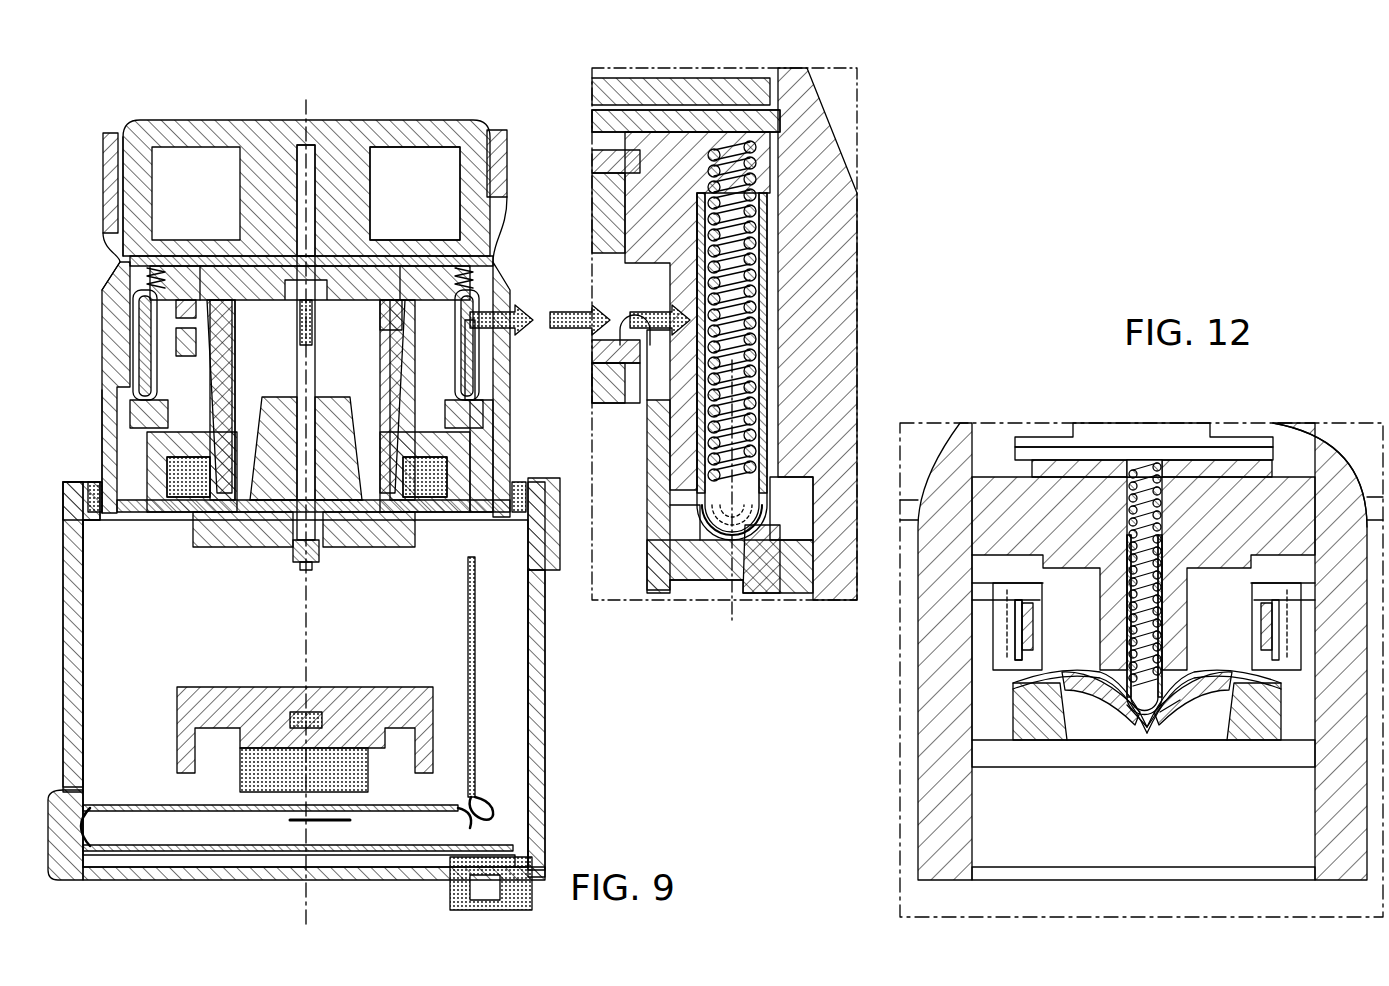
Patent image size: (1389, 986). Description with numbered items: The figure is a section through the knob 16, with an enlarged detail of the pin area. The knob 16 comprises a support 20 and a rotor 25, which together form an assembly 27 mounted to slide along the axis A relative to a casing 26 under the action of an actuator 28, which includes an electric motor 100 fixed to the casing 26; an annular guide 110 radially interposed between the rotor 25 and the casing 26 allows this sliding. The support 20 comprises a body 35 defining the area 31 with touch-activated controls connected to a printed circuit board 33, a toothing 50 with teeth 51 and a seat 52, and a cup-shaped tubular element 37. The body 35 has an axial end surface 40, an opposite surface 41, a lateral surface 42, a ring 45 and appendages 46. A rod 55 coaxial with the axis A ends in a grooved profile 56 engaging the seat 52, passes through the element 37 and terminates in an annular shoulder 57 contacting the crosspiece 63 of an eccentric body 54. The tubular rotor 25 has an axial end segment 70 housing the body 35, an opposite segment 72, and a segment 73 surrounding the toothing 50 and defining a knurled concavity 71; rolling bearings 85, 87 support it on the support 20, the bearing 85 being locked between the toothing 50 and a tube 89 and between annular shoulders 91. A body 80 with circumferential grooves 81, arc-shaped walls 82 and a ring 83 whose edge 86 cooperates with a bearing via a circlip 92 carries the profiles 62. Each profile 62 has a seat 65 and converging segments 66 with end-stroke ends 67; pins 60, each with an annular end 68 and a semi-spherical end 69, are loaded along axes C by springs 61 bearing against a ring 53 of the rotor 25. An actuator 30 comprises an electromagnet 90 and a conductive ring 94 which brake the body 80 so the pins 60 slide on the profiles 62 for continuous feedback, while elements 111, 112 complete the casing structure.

In FIG. 9, the knob 16 is at (495, 108).
In FIG. 9, the support 20 is at (203, 118).
In FIG. 9, the rotor 25 is at (505, 236).
In FIG. 12, the rotor 25 is at (1305, 410).
In FIG. 9, the casing 26 is at (545, 655).
In FIG. 9, the assembly 27 is at (52, 185).
In FIG. 9, the actuator 28 is at (350, 792).
In FIG. 9, the actuator 30 is at (150, 540).
In FIG. 9, the area 31 is at (406, 118).
In FIG. 9, the printed circuit board 33 is at (490, 740).
In FIG. 9, the body 35 is at (258, 140).
In FIG. 9, the cup-shaped tubular element 37 is at (250, 450).
In FIG. 9, the axial end surface 40 is at (238, 118).
In FIG. 9, the surface 41 is at (262, 225).
In FIG. 9, the lateral surface 42 is at (110, 172).
In FIG. 9, the ring 45 is at (455, 262).
In FIG. 9, the appendages 46 is at (330, 230).
In FIG. 9, the toothing 50 is at (335, 272).
In FIG. 9, the teeth 51 is at (400, 300).
In FIG. 9, the seat 52 is at (262, 272).
In FIG. 9, the ring 53 is at (490, 262).
In FIG. 12, the ring 53 is at (1093, 447).
In FIG. 9, the body 54 is at (262, 568).
In FIG. 9, the rod 55 is at (315, 368).
In FIG. 9, the grooved profile 56 is at (314, 330).
In FIG. 9, the annular shoulder 57 is at (318, 556).
In FIG. 9, the pins 60 is at (135, 360).
In FIG. 12, the pins 60 is at (1170, 540).
In FIG. 9, the springs 61 is at (165, 268).
In FIG. 12, the springs 61 is at (1160, 490).
In FIG. 9, the profiles 62 is at (145, 420).
In FIG. 12, the profiles 62 is at (1147, 742).
In FIG. 9, the crosspiece 63 is at (400, 512).
In FIG. 9, the seat 65 is at (760, 555).
In FIG. 12, the seat 65 is at (1165, 725).
In FIG. 9, the segments 66 is at (790, 520).
In FIG. 12, the segments 66 is at (1060, 715).
In FIG. 12, the ends 67 is at (1030, 580).
In FIG. 9, the annular end 68 is at (770, 185).
In FIG. 12, the annular end 68 is at (1060, 500).
In FIG. 9, the semi-spherical end 69 is at (700, 525).
In FIG. 12, the semi-spherical end 69 is at (1175, 705).
In FIG. 9, the axial end segment 70 is at (128, 138).
In FIG. 9, the knurled annular concavity 71 is at (108, 240).
In FIG. 9, the axial end segment 72 is at (103, 440).
In FIG. 9, the segment 73 is at (110, 300).
In FIG. 12, the segment 73 is at (940, 540).
In FIG. 9, the body 80 is at (485, 440).
In FIG. 12, the body 80 is at (985, 720).
In FIG. 9, the circumferential grooves 81 is at (200, 388).
In FIG. 12, the circumferential grooves 81 is at (1045, 632).
In FIG. 9, the walls 82 is at (158, 440).
In FIG. 12, the walls 82 is at (1110, 750).
In FIG. 9, the ring 83 is at (390, 340).
In FIG. 9, the annular rolling bearing 85 is at (475, 330).
In FIG. 9, the edge 86 is at (196, 310).
In FIG. 9, the annular rolling bearing 87 is at (196, 344).
In FIG. 9, the tube 89 is at (398, 330).
In FIG. 9, the electromagnet 90 is at (430, 500).
In FIG. 12, the electromagnet 90 is at (1000, 780).
In FIG. 9, the annular shoulders 91 is at (650, 200).
In FIG. 9, the circlip 92 is at (612, 370).
In FIG. 9, the ring 94 is at (190, 445).
In FIG. 12, the ring 94 is at (990, 752).
In FIG. 9, the electric motor 100 is at (275, 775).
In FIG. 9, the annular guide 110 is at (517, 512).
In FIG. 9, the elements 111 is at (140, 805).
In FIG. 9, the element 112 is at (468, 640).
In FIG. 9, the axis A is at (318, 145).
In FIG. 9, the axes C is at (130, 248).